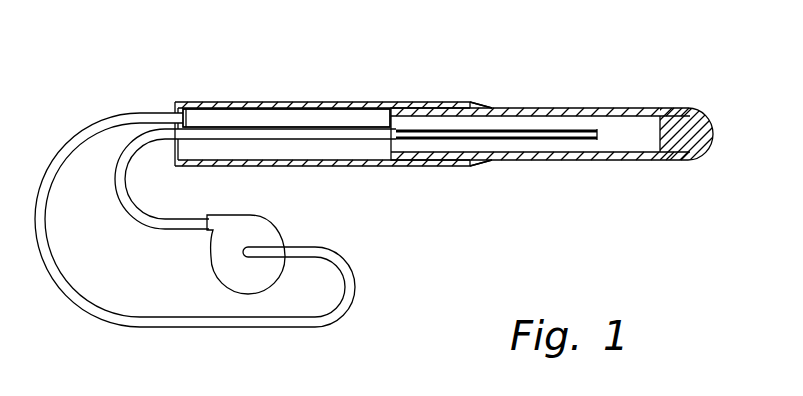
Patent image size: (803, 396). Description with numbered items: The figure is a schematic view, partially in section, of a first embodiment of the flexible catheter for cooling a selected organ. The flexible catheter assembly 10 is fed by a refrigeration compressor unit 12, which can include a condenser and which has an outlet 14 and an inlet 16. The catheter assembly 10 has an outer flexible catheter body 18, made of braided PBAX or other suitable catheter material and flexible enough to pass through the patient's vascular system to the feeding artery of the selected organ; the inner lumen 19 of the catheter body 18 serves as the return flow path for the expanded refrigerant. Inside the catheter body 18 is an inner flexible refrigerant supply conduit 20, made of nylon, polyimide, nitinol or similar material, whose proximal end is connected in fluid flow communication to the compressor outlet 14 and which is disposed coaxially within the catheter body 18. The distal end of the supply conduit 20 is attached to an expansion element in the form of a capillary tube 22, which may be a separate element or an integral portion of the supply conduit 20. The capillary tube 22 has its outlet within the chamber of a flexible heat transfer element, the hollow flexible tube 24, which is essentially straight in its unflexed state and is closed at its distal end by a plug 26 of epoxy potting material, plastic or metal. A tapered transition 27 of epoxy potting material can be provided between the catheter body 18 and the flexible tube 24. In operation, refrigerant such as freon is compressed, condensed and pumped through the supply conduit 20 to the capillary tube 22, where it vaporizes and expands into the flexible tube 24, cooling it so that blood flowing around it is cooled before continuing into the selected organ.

The flexible catheter assembly 10 is at (606, 44).
The refrigeration compressor unit 12 is at (268, 221).
The outlet 14 is at (128, 188).
The inlet 16 is at (222, 327).
The outer flexible catheter body 18 is at (292, 102).
The inner lumen 19 is at (345, 118).
The inner flexible refrigerant supply conduit 20 is at (222, 127).
The capillary tube 22 is at (540, 130).
The hollow flexible tube 24 is at (628, 106).
The plug 26 is at (713, 133).
The shoulder 27 is at (483, 105).